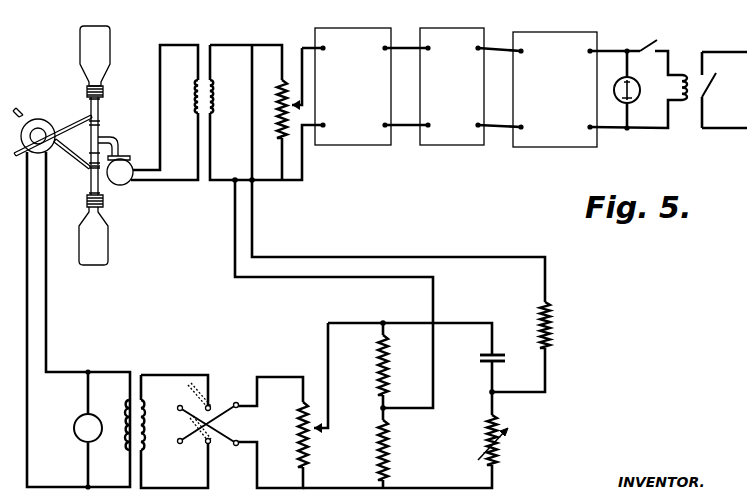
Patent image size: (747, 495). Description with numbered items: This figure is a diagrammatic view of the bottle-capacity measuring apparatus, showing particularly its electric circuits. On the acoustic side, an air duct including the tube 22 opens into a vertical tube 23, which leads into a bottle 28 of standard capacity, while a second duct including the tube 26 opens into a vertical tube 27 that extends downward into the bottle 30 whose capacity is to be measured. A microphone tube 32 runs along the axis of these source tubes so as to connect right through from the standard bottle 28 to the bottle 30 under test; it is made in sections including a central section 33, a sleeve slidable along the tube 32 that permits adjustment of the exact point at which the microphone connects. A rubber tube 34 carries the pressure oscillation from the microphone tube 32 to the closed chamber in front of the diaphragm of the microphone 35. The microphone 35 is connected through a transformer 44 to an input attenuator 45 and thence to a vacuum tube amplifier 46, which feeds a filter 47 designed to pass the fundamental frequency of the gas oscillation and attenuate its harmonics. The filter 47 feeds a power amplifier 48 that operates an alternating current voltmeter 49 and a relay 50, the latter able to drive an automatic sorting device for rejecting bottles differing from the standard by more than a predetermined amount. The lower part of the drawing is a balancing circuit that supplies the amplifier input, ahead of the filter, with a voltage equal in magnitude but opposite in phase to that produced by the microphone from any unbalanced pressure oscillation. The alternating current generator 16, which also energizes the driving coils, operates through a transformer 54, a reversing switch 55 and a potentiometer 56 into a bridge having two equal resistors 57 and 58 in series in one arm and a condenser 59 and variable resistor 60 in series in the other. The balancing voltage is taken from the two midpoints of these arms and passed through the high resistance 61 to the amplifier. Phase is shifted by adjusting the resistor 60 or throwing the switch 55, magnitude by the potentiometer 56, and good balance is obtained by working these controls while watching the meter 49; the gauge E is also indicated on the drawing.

The pressure gauge E is at (30, 120).
The generator 16 is at (78, 420).
The tube 22 is at (88, 113).
The vertical tube 23 is at (91, 104).
The tube 26 is at (73, 164).
The vertical tube 27 is at (89, 194).
The standard bottle 28 is at (90, 41).
The bottle 30 is at (100, 238).
The microphone tube 32 is at (89, 154).
The central section 33 is at (99, 134).
The rubber tube 34 is at (120, 139).
The microphone 35 is at (124, 184).
The transformer 44 is at (193, 100).
The input attenuator 45 is at (291, 57).
The vacuum tube amplifier 46 is at (351, 33).
The filter 47 is at (440, 33).
The power amplifier 48 is at (535, 36).
The alternating current voltmeter 49 is at (616, 78).
The relay 50 is at (688, 75).
The transformer 54 is at (136, 383).
The reversing switch 55 is at (222, 399).
The potentiometer 56 is at (296, 419).
The resistor 57 is at (375, 362).
The resistor 58 is at (376, 449).
The condenser 59 is at (496, 353).
The variable resistor 60 is at (486, 433).
The high resistance 61 is at (552, 324).